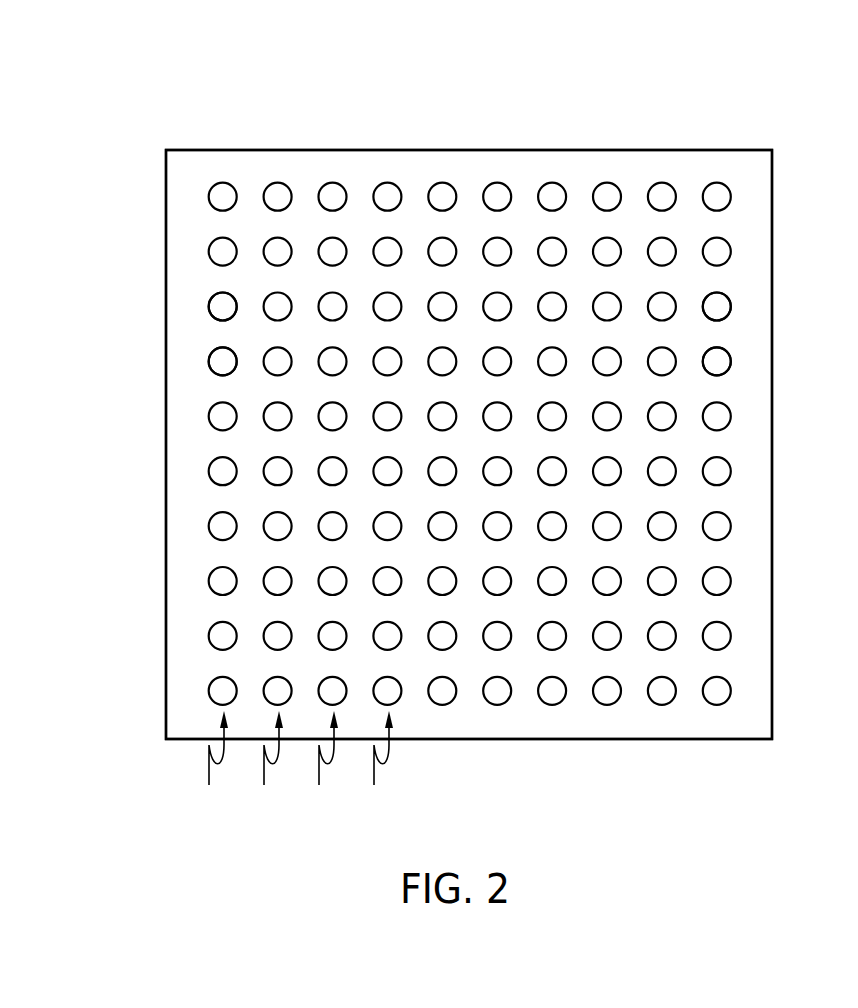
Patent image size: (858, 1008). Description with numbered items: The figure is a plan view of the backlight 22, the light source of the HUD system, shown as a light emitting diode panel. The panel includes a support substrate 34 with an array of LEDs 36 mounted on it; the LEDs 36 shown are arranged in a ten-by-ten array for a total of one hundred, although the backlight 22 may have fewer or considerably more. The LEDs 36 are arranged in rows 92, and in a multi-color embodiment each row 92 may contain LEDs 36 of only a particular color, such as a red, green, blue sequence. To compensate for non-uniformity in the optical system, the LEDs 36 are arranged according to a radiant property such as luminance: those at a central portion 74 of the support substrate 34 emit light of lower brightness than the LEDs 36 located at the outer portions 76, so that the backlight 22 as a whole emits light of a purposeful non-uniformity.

The backlight 22 is at (576, 95).
The support substrate 34 is at (195, 162).
The LEDs 36 is at (210, 306).
The central portion 74 is at (482, 455).
The outer portions 76 is at (398, 162).
The rows 92 is at (295, 763).